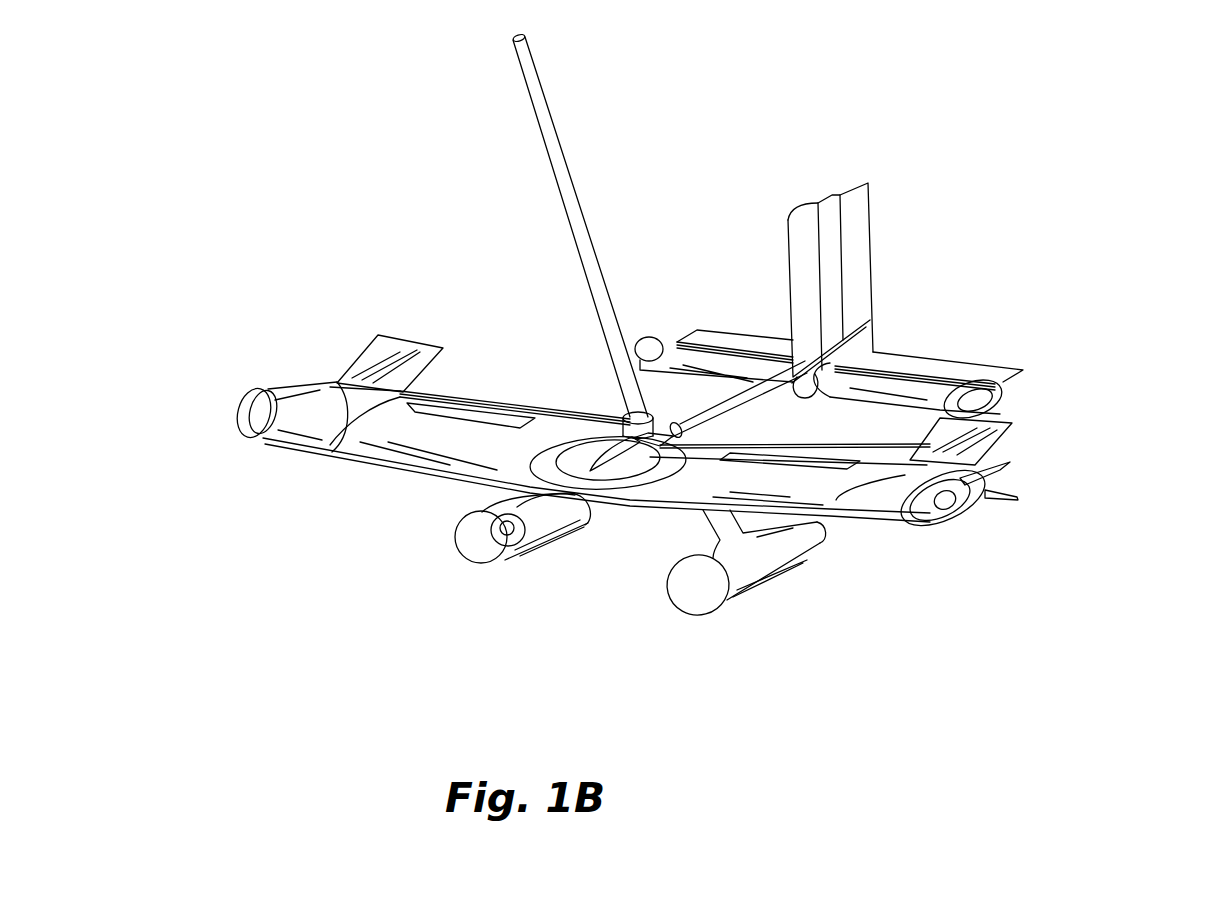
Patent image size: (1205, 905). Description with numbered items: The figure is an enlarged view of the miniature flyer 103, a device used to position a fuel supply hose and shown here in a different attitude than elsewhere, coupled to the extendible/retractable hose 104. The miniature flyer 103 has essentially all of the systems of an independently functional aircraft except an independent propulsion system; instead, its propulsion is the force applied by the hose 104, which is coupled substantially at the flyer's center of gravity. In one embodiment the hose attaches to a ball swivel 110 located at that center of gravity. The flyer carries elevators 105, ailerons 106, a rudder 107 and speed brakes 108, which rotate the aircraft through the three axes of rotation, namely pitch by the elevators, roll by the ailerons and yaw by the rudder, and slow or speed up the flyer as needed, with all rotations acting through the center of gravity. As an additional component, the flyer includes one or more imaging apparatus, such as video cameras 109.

The miniature flyer 103 is at (725, 175).
The extendible/retractable hose 104 is at (570, 172).
The elevators 105 is at (952, 365).
The ailerons 106 is at (378, 337).
The rudder 107 is at (870, 268).
The speed brakes 108 is at (475, 400).
The video cameras 109 is at (242, 415).
The ball swivel 110 is at (620, 420).